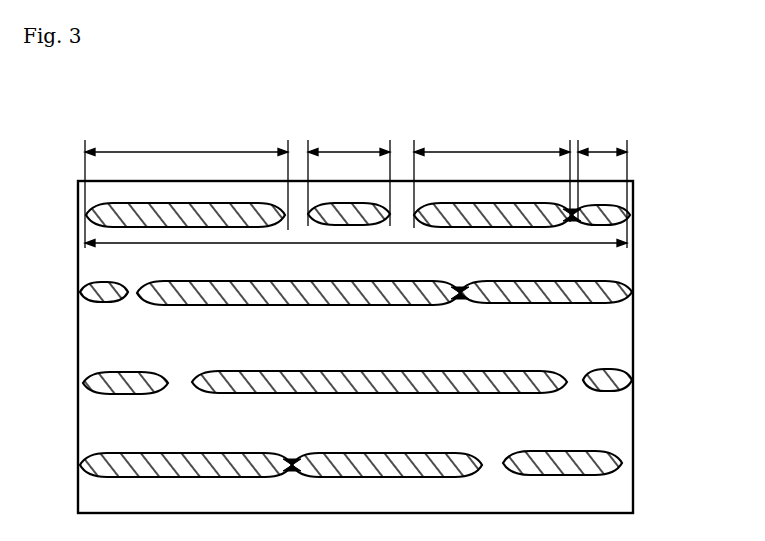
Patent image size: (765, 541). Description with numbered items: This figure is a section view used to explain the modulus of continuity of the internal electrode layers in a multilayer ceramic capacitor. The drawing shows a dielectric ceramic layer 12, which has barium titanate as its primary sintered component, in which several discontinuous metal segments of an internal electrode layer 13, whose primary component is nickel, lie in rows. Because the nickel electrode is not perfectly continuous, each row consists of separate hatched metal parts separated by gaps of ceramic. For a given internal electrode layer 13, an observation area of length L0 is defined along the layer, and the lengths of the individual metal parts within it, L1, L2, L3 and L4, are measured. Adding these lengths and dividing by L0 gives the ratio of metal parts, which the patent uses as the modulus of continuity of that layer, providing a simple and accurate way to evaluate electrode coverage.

The dielectric ceramic layer 12 is at (617, 330).
The internal electrode layer 13 is at (633, 218).
The observation area length L0 is at (356, 256).
The length of metal part L1 is at (186, 187).
The length of metal part L2 is at (349, 176).
The length of metal part L3 is at (492, 177).
The length of metal part L4 is at (602, 187).